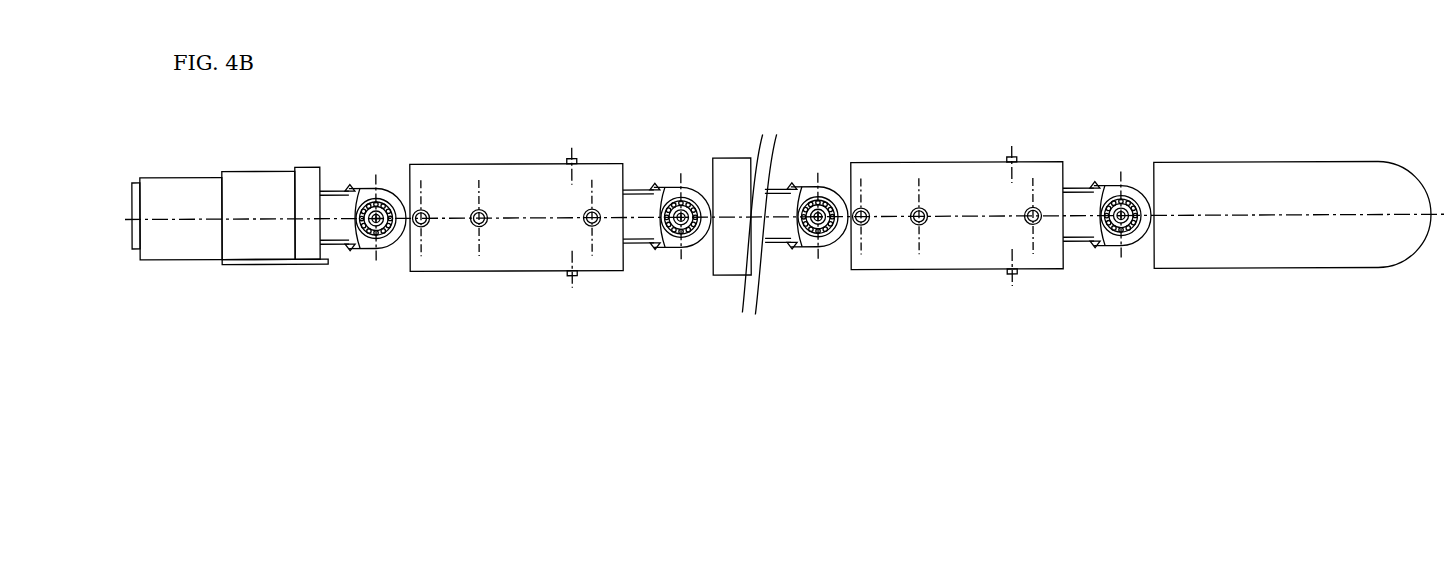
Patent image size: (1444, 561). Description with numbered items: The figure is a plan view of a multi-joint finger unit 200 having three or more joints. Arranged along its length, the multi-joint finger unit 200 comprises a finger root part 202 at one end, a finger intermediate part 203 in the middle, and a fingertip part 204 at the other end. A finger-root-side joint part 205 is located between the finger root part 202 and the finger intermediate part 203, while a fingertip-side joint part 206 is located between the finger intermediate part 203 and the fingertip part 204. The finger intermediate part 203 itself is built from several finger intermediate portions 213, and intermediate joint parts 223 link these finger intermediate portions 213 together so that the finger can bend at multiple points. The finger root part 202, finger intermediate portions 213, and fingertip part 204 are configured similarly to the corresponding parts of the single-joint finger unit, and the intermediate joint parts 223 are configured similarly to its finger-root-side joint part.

The multi-joint finger unit 200 is at (882, 103).
The finger root part 202 is at (256, 282).
The finger intermediate part 203 is at (1058, 343).
The fingertip part 204 is at (1284, 279).
The finger-root-side joint part 205 is at (370, 271).
The fingertip-side joint part 206 is at (1122, 272).
The finger intermediate portion 213 is at (528, 164).
The intermediate joint part 223 is at (705, 135).